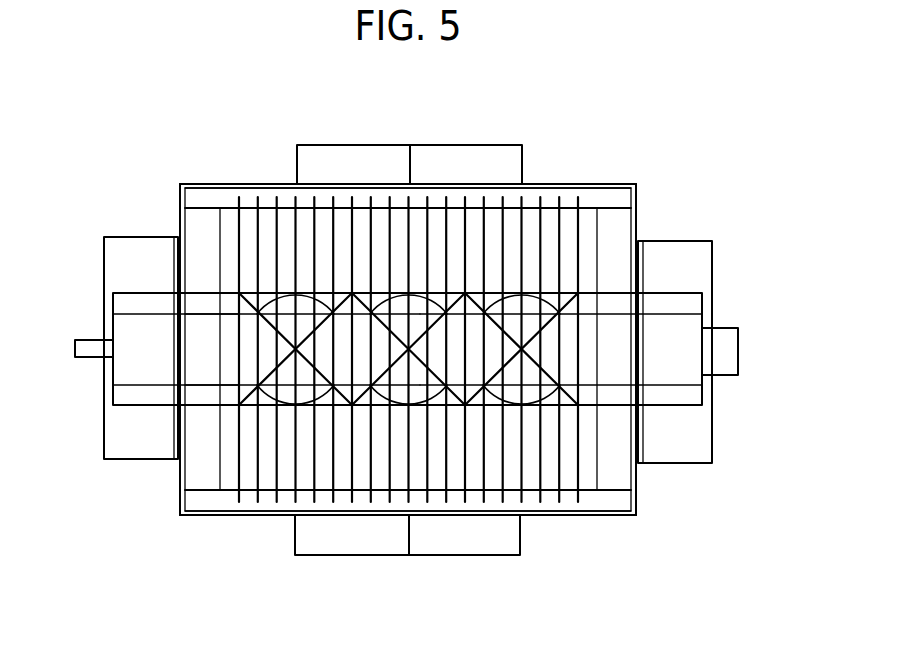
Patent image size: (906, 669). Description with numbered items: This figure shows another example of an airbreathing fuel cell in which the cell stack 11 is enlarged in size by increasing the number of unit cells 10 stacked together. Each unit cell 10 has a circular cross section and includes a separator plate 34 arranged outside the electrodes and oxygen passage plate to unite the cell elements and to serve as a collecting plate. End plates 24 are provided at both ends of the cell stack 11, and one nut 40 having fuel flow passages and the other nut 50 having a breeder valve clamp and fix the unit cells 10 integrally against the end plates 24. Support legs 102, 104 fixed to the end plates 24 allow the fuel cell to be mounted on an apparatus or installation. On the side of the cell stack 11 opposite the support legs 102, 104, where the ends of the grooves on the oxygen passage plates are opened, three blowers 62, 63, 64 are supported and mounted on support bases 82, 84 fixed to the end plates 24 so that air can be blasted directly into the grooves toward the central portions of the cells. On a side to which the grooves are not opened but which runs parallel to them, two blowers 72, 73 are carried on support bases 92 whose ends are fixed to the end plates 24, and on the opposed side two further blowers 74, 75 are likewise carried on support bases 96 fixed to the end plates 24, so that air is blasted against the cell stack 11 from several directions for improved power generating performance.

The unit cell 10 is at (548, 482).
The cell stack 11 is at (495, 222).
The end plate 24 is at (203, 237).
The separator plate 34 is at (580, 200).
The nut 40 is at (122, 304).
The nut 50 is at (683, 300).
The blower 62 is at (270, 407).
The blower 63 is at (418, 407).
The blower 64 is at (548, 408).
The blower 72 is at (353, 146).
The blower 73 is at (463, 146).
The blower 74 is at (352, 545).
The blower 75 is at (464, 547).
The support base 82 is at (203, 393).
The support base 84 is at (202, 302).
The support base 92 is at (213, 183).
The support base 96 is at (212, 516).
The support leg 102 is at (700, 447).
The support leg 104 is at (117, 442).